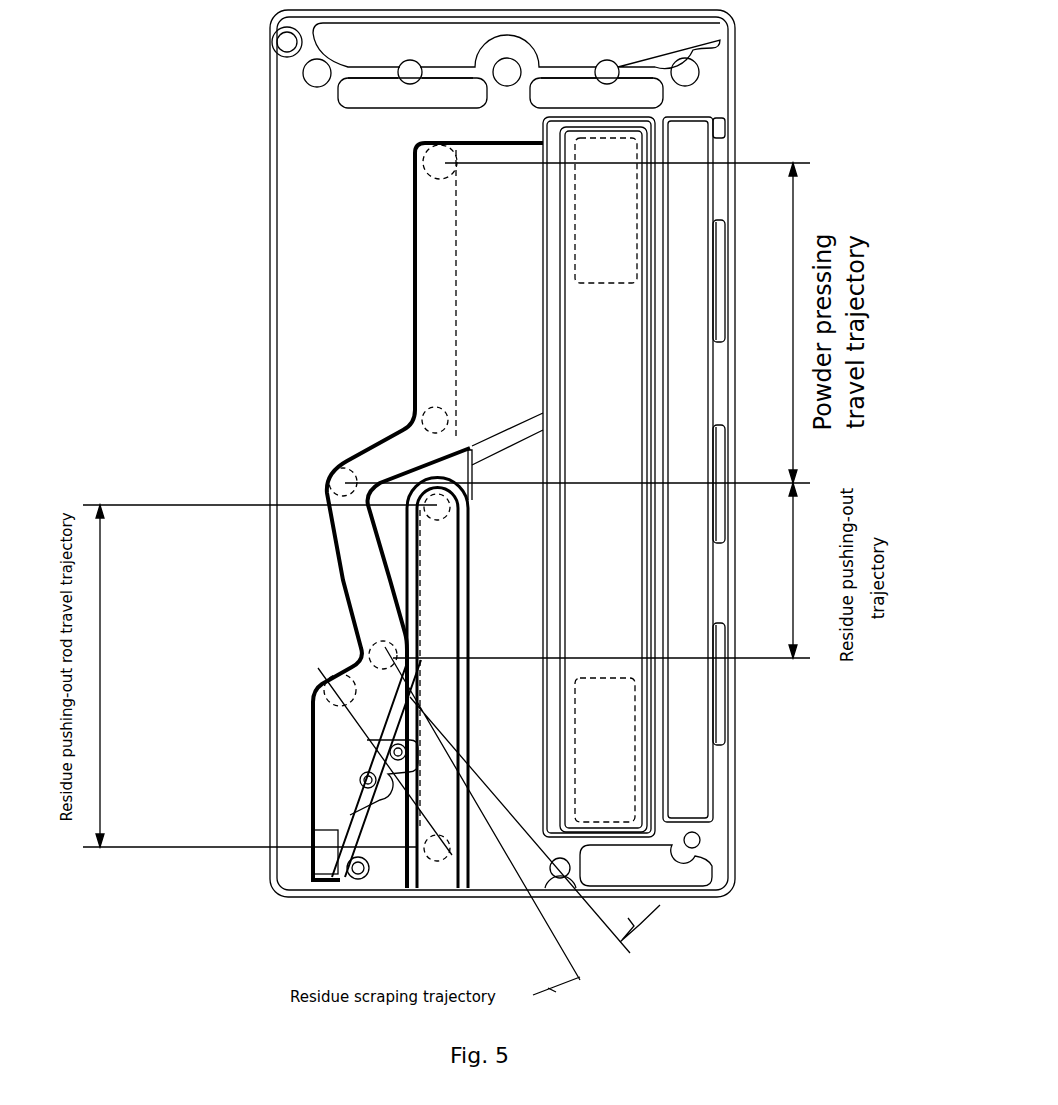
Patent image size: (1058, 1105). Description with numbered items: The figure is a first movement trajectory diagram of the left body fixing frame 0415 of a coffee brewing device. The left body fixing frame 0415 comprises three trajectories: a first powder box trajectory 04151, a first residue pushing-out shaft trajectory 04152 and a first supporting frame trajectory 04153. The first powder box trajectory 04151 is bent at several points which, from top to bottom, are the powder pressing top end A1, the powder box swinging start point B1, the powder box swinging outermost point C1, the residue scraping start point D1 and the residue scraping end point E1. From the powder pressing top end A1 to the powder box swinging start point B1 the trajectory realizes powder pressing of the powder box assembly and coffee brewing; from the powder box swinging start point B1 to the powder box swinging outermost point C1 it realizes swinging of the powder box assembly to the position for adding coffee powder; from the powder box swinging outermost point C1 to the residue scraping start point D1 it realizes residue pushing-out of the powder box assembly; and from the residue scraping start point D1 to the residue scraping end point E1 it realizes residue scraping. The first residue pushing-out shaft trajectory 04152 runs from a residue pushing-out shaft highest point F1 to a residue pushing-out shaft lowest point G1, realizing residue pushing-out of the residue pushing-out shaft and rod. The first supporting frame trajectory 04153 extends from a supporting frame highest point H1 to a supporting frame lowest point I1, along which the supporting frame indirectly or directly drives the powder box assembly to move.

The powder pressing top end A1 is at (458, 172).
The supporting frame highest point H1 is at (610, 210).
The left body fixing frame 0415 is at (345, 262).
The first powder box trajectory 04151 is at (437, 325).
The first supporting frame trajectory 04153 is at (610, 480).
The powder box swinging start point B1 is at (432, 433).
The powder box swinging outermost point C1 is at (345, 478).
The residue pushing-out shaft highest point F1 is at (435, 540).
The first residue pushing-out shaft trajectory 04152 is at (440, 605).
The residue scraping start point D1 is at (365, 645).
The residue scraping end point E1 is at (340, 690).
The supporting frame lowest point I1 is at (400, 740).
The residue pushing-out shaft lowest point G1 is at (432, 838).